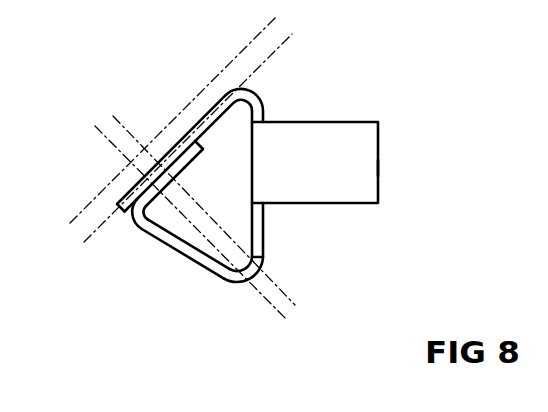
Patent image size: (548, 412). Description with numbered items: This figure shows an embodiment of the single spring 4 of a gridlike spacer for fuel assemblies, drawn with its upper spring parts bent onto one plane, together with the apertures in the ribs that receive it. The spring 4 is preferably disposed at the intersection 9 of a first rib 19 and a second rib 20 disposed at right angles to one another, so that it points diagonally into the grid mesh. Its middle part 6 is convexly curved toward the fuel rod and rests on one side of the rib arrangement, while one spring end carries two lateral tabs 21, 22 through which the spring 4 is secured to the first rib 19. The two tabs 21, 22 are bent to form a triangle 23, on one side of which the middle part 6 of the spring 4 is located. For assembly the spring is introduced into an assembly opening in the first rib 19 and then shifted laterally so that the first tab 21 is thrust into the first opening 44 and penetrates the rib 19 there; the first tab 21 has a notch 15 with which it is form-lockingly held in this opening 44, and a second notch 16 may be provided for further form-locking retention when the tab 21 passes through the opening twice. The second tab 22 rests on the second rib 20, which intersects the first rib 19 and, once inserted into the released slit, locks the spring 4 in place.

The spring 4 is at (335, 130).
The middle part 6 is at (380, 168).
The intersection 9 is at (147, 161).
The notch 15 is at (237, 283).
The second notch 16 is at (140, 226).
The first rib 19 is at (293, 303).
The second rib 20 is at (268, 40).
The first tab 21 is at (197, 261).
The second tab 22 is at (200, 120).
The triangle 23 is at (205, 196).
The first opening 44 is at (150, 168).